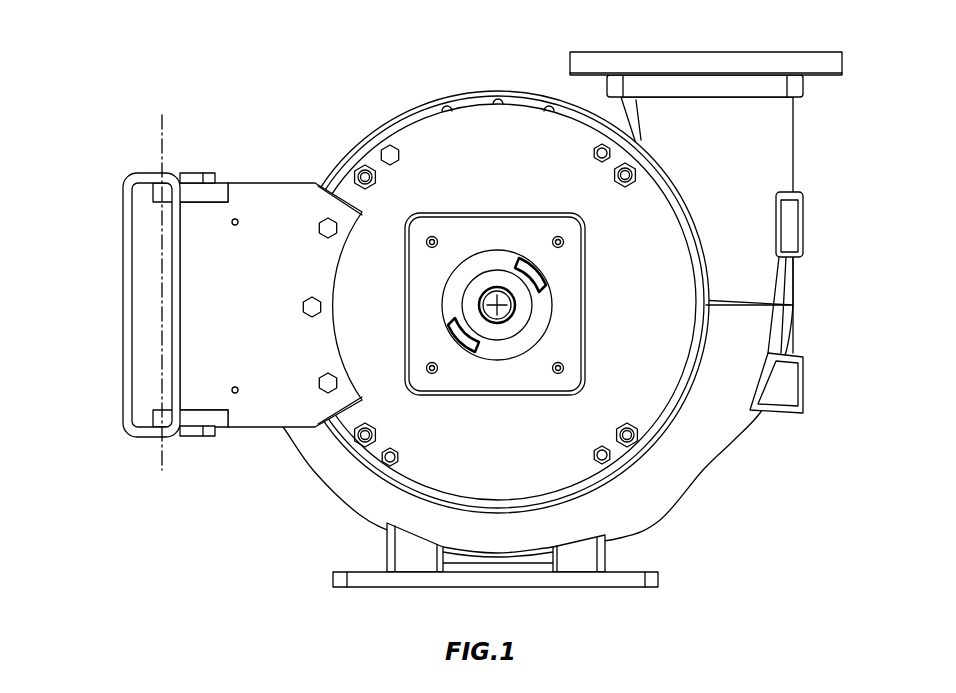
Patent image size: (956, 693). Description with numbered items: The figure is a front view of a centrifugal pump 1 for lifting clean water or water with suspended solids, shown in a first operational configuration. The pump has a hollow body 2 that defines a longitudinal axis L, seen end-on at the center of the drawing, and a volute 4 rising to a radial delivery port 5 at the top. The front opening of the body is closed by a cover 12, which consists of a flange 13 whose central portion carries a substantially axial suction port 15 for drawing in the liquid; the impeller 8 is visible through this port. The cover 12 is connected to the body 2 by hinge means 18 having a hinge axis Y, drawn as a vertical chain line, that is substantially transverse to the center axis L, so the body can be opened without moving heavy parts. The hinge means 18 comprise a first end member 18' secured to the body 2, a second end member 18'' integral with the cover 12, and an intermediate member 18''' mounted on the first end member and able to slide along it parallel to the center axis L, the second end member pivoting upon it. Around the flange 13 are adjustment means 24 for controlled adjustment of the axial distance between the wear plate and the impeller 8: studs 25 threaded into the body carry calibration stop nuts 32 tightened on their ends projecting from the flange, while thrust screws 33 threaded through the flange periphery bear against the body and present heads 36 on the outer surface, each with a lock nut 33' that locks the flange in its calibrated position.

The centrifugal pump 1 is at (222, 76).
The hollow body 2 is at (705, 469).
The volute 4 is at (778, 157).
The radial delivery port 5 is at (650, 52).
The impeller 8 is at (478, 270).
The cover 12 is at (465, 130).
The flange 13 is at (680, 272).
The axial suction port 15 is at (586, 342).
The hinge means 18 is at (130, 305).
The first end member 18' is at (161, 454).
The second end member 18'' is at (271, 277).
The intermediate member 18''' is at (130, 241).
The adjustment means 24 is at (400, 158).
The studs 25 is at (374, 182).
The calibration stop nuts 32 is at (628, 187).
The thrust screws 33 is at (575, 442).
The lock nut 33' is at (418, 460).
The heads 36 is at (594, 153).
The hinge axis Y is at (160, 126).
The longitudinal axis L is at (500, 325).